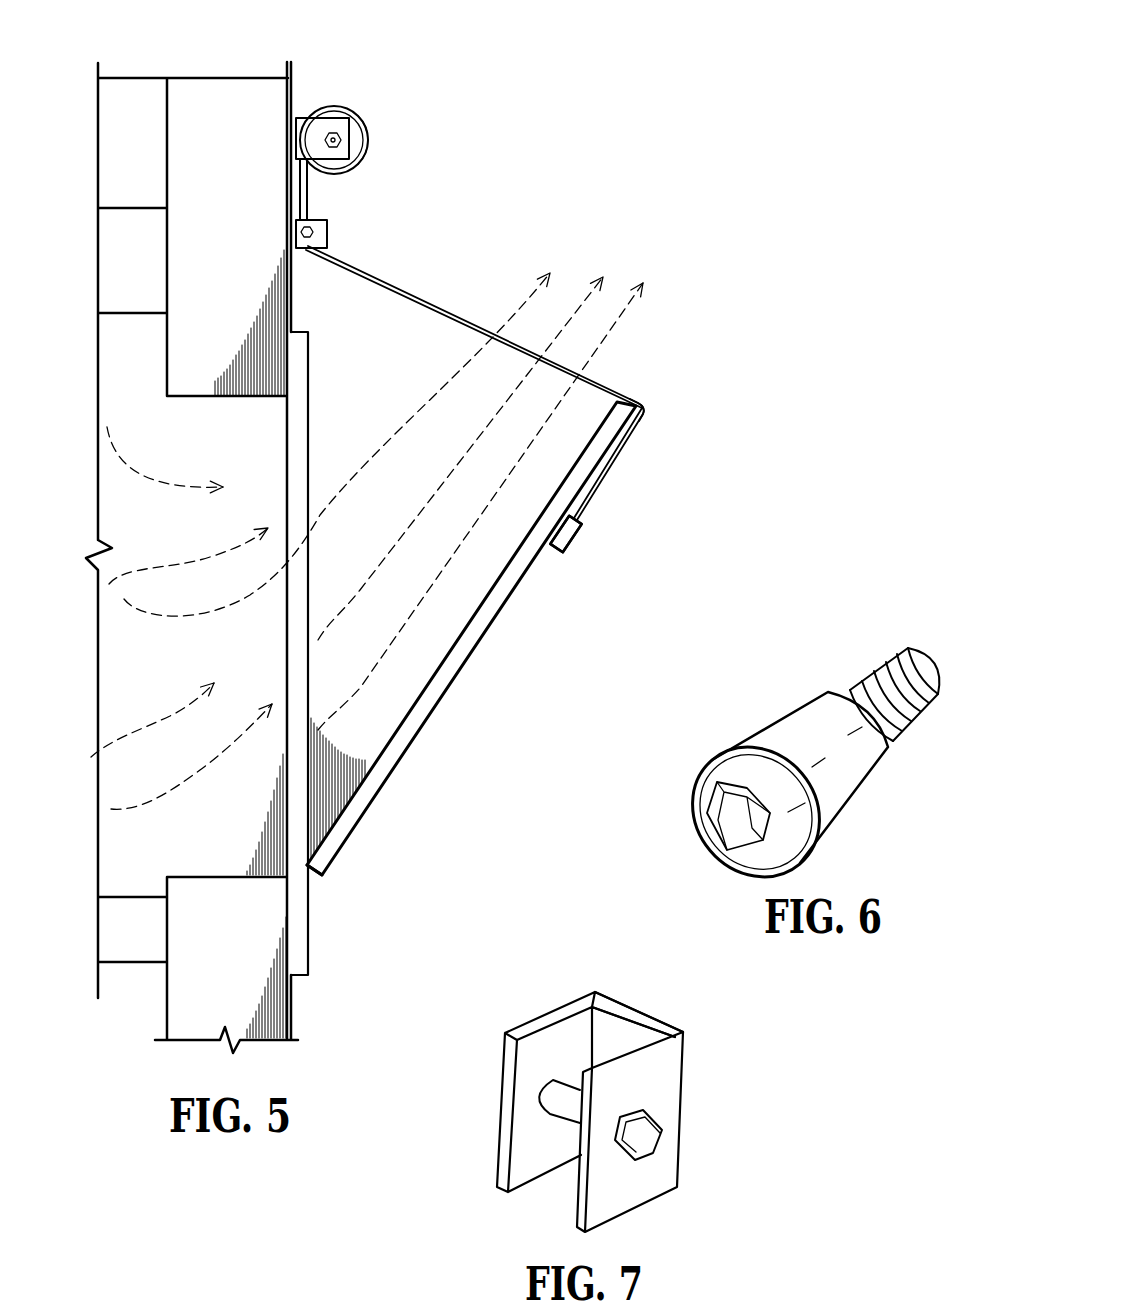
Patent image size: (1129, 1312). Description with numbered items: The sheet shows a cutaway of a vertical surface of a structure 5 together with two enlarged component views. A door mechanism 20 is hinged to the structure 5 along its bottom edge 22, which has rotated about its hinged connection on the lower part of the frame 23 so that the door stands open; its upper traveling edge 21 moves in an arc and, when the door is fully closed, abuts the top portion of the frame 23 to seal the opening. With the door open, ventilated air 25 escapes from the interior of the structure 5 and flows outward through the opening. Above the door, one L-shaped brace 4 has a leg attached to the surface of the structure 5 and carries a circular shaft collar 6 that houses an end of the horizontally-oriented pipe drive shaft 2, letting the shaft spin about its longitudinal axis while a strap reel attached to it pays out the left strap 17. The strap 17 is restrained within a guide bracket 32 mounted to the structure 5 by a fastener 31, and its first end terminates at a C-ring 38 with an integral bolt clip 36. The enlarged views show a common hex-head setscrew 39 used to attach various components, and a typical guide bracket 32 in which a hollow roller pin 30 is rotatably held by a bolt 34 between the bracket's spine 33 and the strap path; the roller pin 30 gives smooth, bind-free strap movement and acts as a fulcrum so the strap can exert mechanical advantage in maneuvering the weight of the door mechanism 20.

In FIG. 5, the structure 5 is at (198, 78).
In FIG. 5, the brace 4 is at (309, 116).
In FIG. 5, the shaft collar 6 is at (333, 131).
In FIG. 5, the pipe drive shaft 2 is at (357, 116).
In FIG. 5, the guide bracket 32 is at (328, 234).
In FIG. 7, the guide bracket 32 is at (631, 1080).
In FIG. 5, the bolt 31 is at (307, 240).
In FIG. 5, the left strap 17 is at (396, 280).
In FIG. 5, the traveling edge 21 is at (650, 408).
In FIG. 5, the frame 23 is at (324, 453).
In FIG. 5, the ventilated air 25 is at (76, 424).
In FIG. 5, the door mechanism 20 is at (470, 665).
In FIG. 5, the bottom edge 22 is at (318, 857).
In FIG. 5, the bolt clip 36 is at (577, 550).
In FIG. 5, the C-ring 38 is at (577, 550).
In FIG. 6, the hex-head setscrew 39 is at (780, 673).
In FIG. 7, the spine 33 is at (627, 1008).
In FIG. 7, the roller pin 30 is at (572, 1112).
In FIG. 7, the bolt 34 is at (662, 1135).